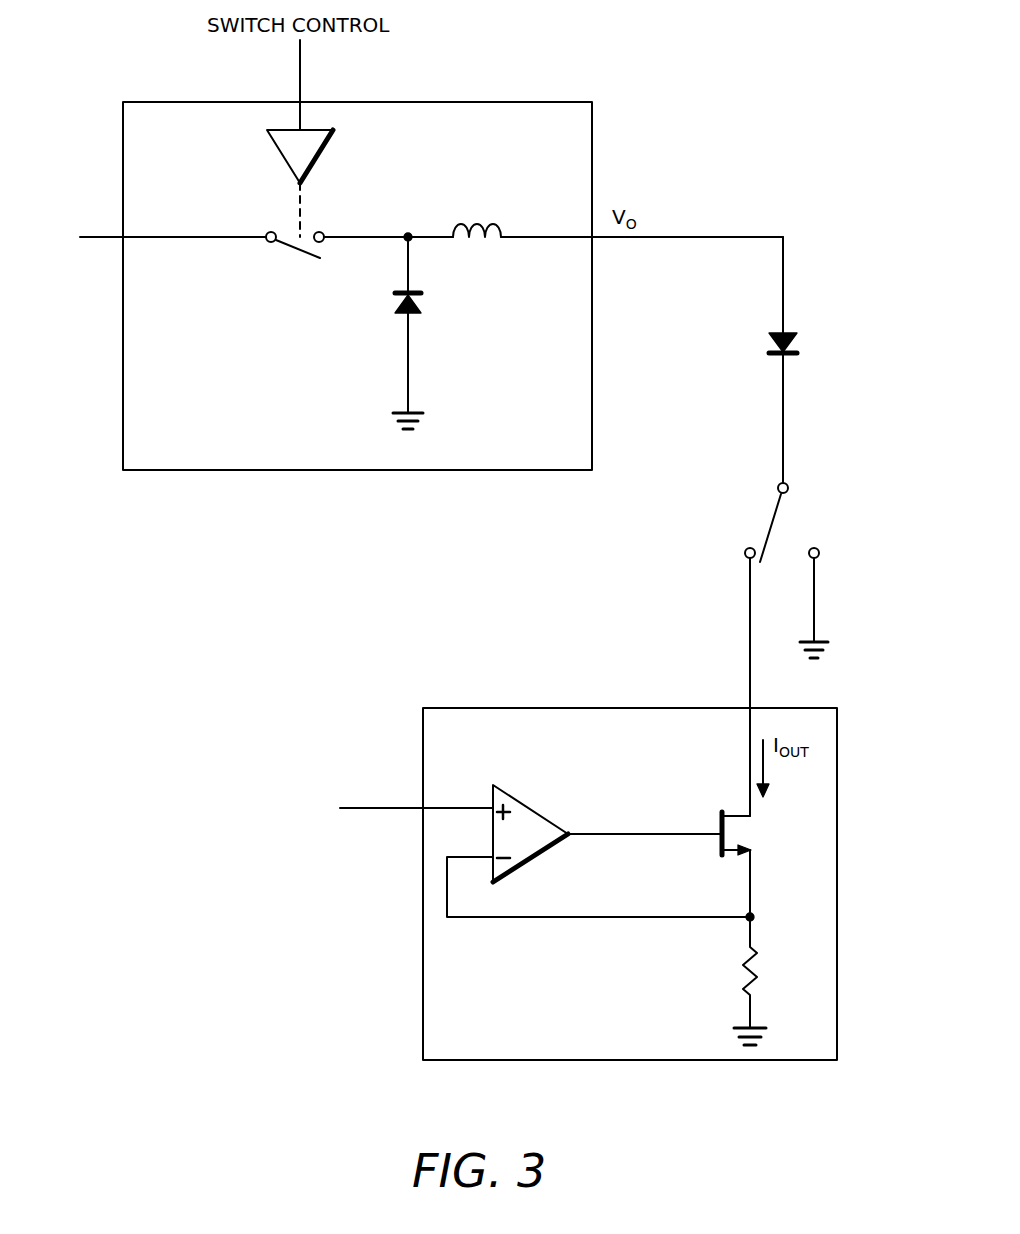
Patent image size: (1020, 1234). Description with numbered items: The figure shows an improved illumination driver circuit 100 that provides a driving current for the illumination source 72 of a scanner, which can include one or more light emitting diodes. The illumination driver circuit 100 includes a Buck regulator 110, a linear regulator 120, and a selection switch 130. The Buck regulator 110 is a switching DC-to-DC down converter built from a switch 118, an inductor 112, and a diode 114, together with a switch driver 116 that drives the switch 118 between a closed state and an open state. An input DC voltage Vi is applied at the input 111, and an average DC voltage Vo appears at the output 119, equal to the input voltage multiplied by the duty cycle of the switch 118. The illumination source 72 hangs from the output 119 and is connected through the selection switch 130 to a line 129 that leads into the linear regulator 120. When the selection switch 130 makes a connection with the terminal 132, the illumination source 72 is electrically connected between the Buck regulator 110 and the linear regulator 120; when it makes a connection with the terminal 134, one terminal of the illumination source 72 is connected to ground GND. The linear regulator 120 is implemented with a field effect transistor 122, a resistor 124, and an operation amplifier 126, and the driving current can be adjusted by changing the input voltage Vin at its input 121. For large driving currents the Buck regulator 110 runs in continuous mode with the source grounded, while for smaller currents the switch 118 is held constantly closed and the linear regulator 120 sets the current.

The illumination driver circuit 100 is at (185, 680).
The Buck regulator 110 is at (140, 100).
The input 111 is at (90, 244).
The inductor 112 is at (478, 224).
The diode 114 is at (422, 303).
The switch driver 116 is at (282, 161).
The switch 118 is at (294, 247).
The output 119 is at (722, 236).
The illumination source 72 is at (797, 344).
The selection switch 130 is at (774, 513).
The terminal 132 is at (745, 553).
The terminal 134 is at (819, 553).
The current input line 129 is at (749, 683).
The linear regulator 120 is at (437, 707).
The input 121 is at (354, 808).
The operation amplifier 126 is at (531, 804).
The field effect transistor 122 is at (721, 811).
The resistor 124 is at (742, 971).